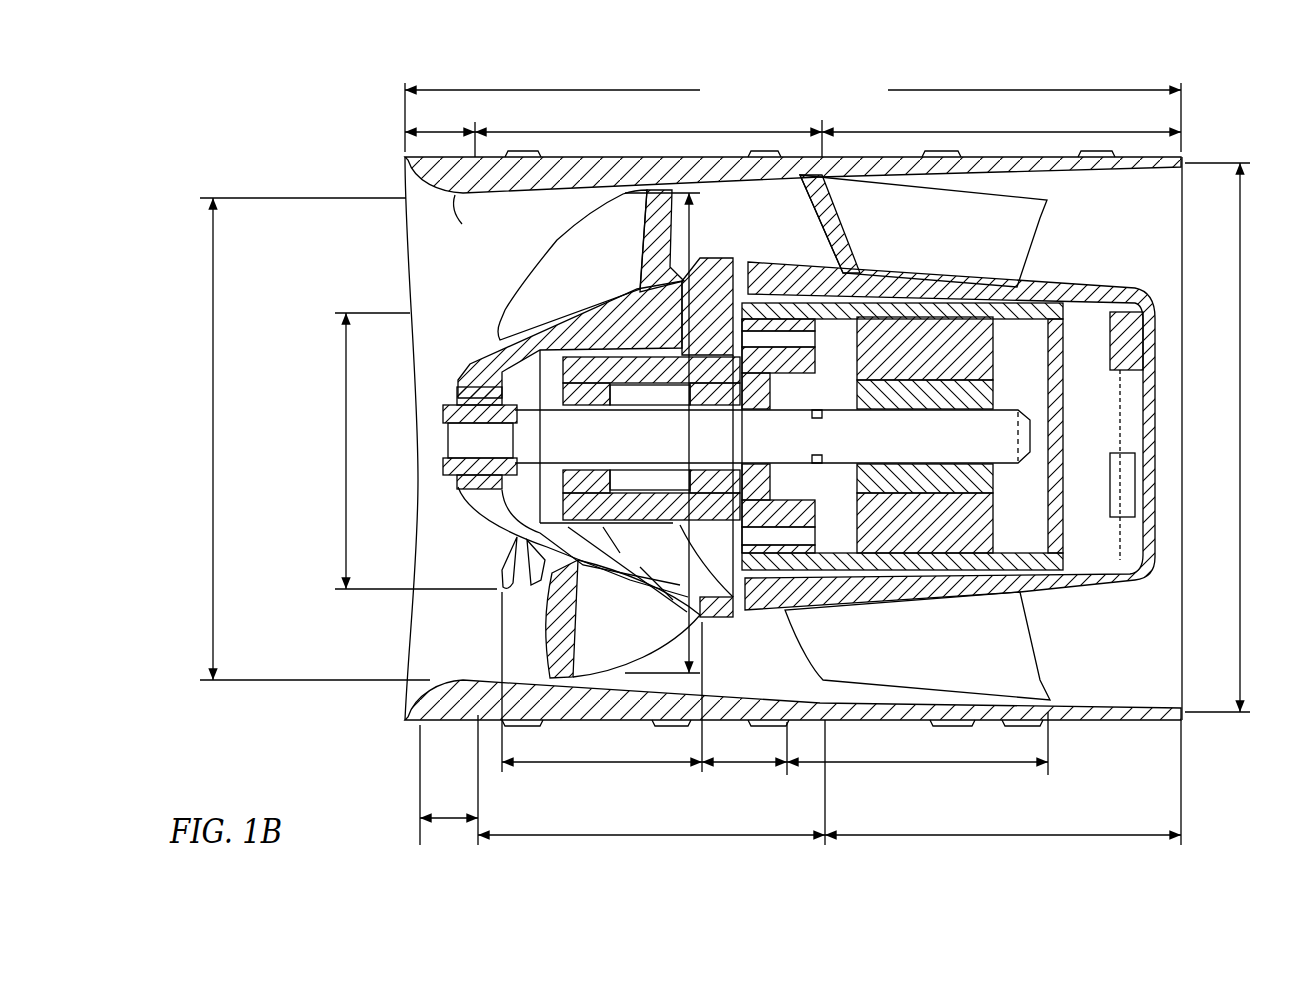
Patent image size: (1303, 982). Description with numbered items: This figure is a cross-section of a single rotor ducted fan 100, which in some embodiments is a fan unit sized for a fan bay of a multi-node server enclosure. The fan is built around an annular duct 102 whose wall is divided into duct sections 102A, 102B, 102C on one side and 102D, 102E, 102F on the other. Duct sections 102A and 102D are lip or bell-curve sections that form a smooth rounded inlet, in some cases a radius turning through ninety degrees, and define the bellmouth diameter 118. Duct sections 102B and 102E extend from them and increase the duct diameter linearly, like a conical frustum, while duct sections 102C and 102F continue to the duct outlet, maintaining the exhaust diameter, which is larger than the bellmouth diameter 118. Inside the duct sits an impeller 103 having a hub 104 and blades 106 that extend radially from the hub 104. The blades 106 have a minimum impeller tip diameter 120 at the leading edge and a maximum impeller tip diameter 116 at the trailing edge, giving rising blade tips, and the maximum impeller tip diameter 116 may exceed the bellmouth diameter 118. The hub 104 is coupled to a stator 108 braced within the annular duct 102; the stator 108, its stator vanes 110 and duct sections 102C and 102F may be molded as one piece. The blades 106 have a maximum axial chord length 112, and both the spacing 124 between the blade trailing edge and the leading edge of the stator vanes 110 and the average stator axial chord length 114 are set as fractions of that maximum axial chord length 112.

The single rotor ducted fan 100 is at (332, 162).
The annular duct 102 is at (620, 733).
The duct section 102A is at (445, 132).
The duct section 102B is at (676, 132).
The duct section 102C is at (1010, 132).
The duct section 102D is at (432, 818).
The duct section 102E is at (572, 835).
The duct section 102F is at (1135, 835).
The impeller 103 is at (507, 532).
The hub 104 is at (591, 437).
The blades 106 is at (635, 633).
The stator 108 is at (1075, 583).
The stator vanes 110 is at (946, 248).
The maximum axial chord length 112 is at (520, 762).
The average stator axial chord length 114 is at (930, 762).
The maximum impeller tip diameter 116 is at (692, 242).
The bellmouth diameter 118 is at (208, 352).
The minimum impeller tip diameter 120 is at (341, 377).
The spacing 124 is at (750, 765).